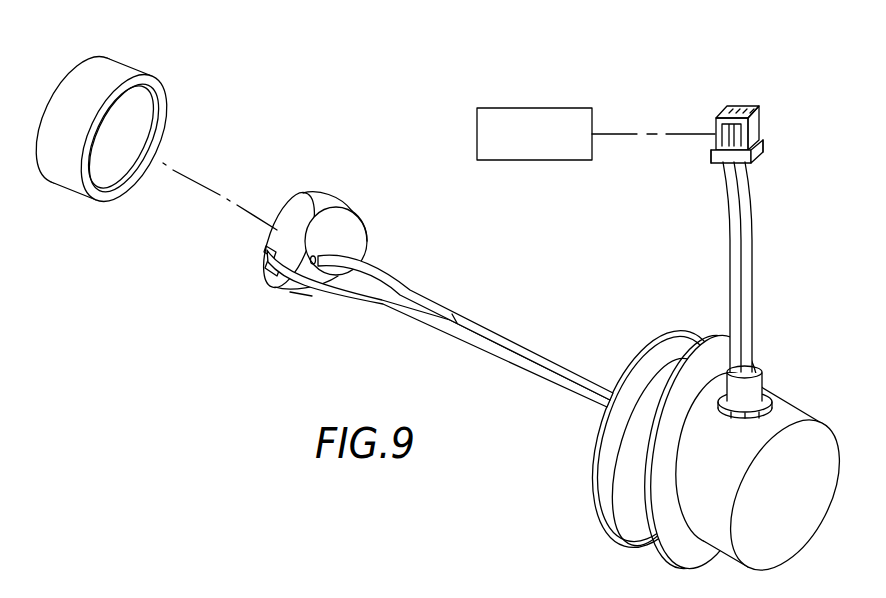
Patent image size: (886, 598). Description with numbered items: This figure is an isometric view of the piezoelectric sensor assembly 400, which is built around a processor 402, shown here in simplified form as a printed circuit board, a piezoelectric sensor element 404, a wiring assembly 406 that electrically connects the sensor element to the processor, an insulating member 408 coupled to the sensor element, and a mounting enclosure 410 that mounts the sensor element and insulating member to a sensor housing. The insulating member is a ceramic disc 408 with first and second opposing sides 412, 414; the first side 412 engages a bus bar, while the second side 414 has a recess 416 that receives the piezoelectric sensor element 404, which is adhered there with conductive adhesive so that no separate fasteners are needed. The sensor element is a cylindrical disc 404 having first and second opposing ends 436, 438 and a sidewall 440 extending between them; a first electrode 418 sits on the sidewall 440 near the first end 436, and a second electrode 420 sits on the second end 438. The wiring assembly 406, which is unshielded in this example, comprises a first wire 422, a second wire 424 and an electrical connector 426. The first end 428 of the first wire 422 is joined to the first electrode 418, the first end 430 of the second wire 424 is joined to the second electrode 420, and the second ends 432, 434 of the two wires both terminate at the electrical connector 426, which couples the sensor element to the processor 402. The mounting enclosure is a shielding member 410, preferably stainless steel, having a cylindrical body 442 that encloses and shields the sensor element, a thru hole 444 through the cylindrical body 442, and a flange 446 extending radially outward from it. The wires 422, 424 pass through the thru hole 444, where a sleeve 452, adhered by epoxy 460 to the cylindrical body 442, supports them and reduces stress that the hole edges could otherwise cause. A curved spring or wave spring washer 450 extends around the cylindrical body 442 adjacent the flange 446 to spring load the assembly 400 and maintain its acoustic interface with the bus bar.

The piezoelectric sensor assembly 400 is at (322, 235).
The processor 402 is at (536, 109).
The piezoelectric sensor element 404 is at (322, 196).
The wiring assembly 406 is at (680, 319).
The insulating member 408 is at (118, 164).
The mounting enclosure 410 is at (702, 319).
The first side 412 is at (72, 77).
The second side 414 is at (157, 90).
The recess 416 is at (143, 125).
The first electrode 418 is at (268, 243).
The second electrode 420 is at (311, 256).
The first wire 422 is at (375, 308).
The second wire 424 is at (400, 288).
The electrical connector 426 is at (747, 104).
The first end of the first wire 428 is at (272, 276).
The first end of the second wire 430 is at (334, 250).
The second end of the first wire 432 is at (710, 166).
The second end of the second wire 434 is at (758, 165).
The first end 436 is at (315, 189).
The second end 438 is at (363, 196).
The sidewall 440 is at (283, 237).
The cylindrical body 442 is at (712, 530).
The thru hole 444 is at (761, 371).
The flange 446 is at (612, 442).
The wave spring washer 450 is at (663, 548).
The sleeve 452 is at (764, 391).
The epoxy 460 is at (748, 419).